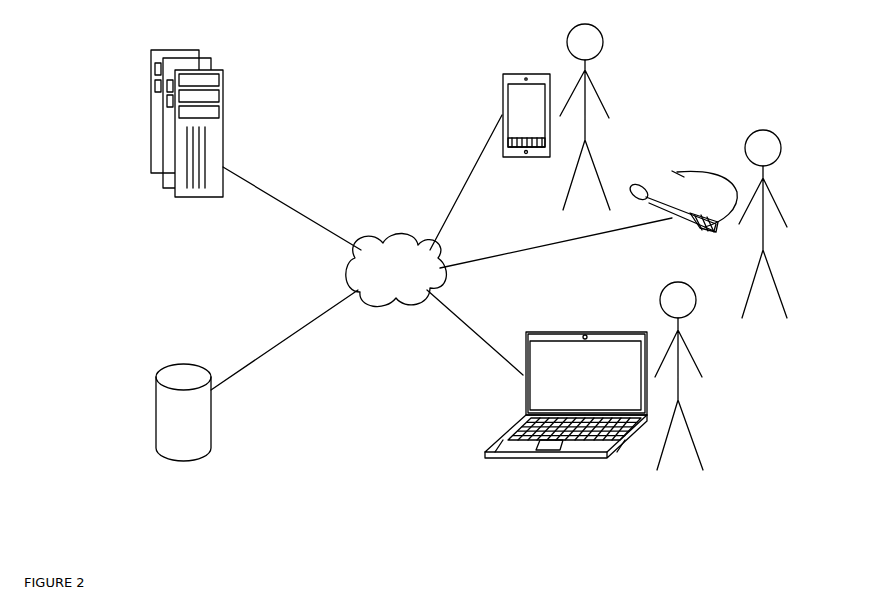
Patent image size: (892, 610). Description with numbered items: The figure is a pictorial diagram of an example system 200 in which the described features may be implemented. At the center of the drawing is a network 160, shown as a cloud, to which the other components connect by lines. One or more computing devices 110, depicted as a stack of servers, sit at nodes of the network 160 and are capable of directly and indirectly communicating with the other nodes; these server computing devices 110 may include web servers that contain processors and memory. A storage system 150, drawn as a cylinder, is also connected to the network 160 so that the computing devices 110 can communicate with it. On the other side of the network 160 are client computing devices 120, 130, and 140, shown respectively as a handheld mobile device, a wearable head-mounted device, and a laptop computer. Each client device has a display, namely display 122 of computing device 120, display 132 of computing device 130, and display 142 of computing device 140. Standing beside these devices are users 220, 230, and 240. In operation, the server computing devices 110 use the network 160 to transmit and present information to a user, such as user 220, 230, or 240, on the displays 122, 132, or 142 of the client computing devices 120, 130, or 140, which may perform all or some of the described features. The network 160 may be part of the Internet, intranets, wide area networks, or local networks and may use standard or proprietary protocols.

The computing device 110 is at (223, 98).
The computing device 120 is at (491, 115).
The display 122 is at (507, 113).
The computing device 130 is at (682, 196).
The display 132 is at (713, 229).
The computing device 140 is at (550, 395).
The display 142 is at (528, 404).
The storage system 150 is at (212, 424).
The network 160 is at (396, 269).
The system environment 200 is at (71, 570).
The user 220 is at (610, 110).
The user 230 is at (786, 217).
The user 240 is at (700, 368).